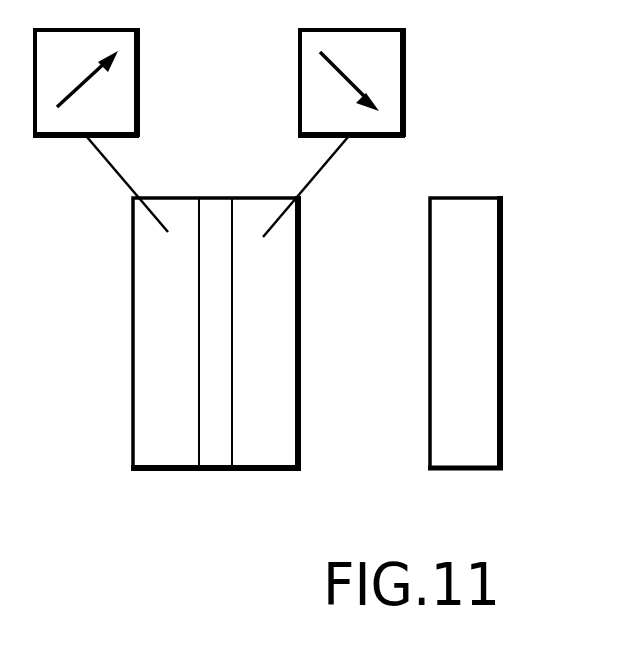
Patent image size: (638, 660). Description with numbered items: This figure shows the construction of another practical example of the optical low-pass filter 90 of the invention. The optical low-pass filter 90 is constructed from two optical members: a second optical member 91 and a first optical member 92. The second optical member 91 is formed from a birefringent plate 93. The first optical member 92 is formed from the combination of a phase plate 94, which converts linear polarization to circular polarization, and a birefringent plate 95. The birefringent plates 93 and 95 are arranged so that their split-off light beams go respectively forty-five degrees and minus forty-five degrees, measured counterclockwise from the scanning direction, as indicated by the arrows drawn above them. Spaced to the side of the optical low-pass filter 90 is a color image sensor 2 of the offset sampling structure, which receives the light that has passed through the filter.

The optical low-pass filter 90 is at (131, 281).
The second optical member 91 is at (192, 528).
The first optical member 92 is at (198, 528).
The birefringent plate 93 is at (168, 470).
The phase plate 94 is at (216, 470).
The birefringent plate 95 is at (273, 470).
The color image sensor 2 is at (504, 325).